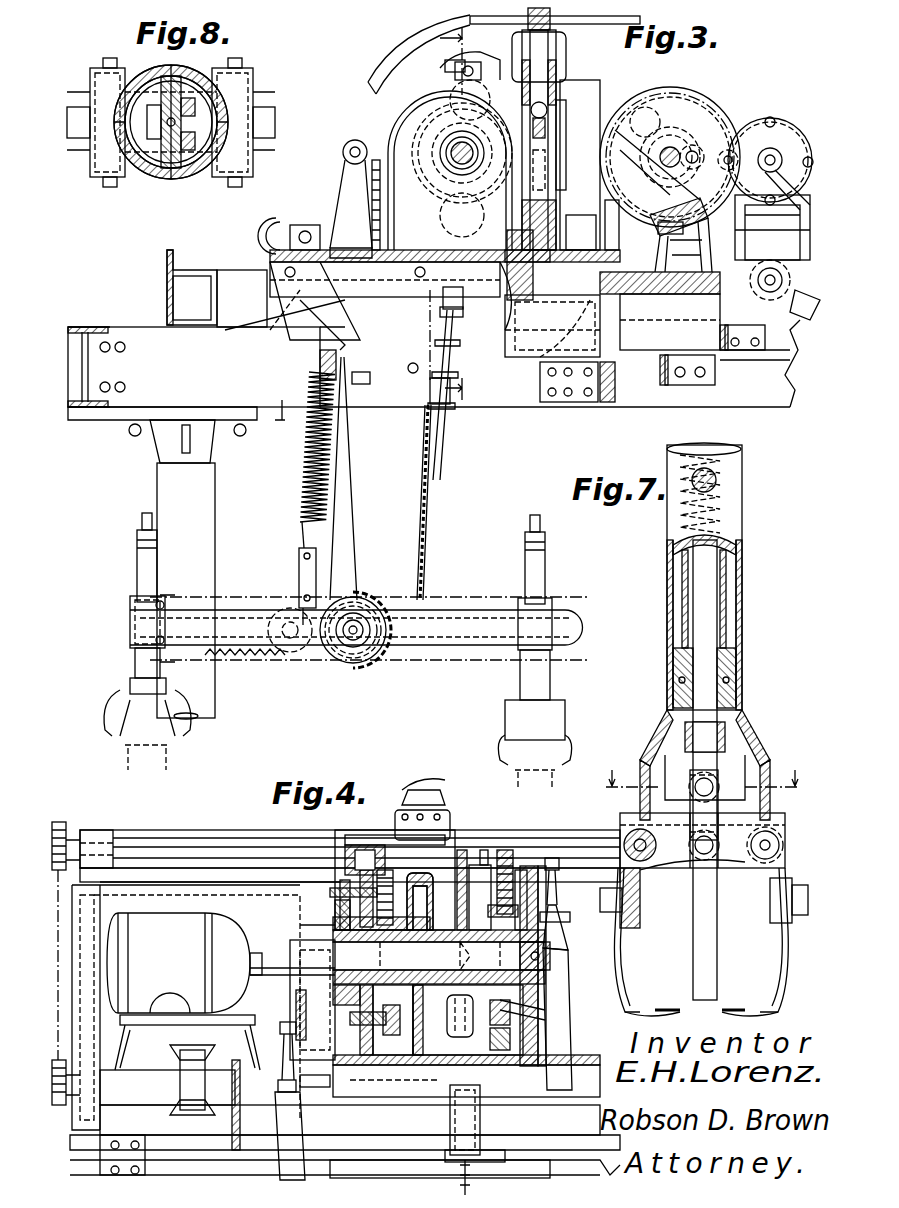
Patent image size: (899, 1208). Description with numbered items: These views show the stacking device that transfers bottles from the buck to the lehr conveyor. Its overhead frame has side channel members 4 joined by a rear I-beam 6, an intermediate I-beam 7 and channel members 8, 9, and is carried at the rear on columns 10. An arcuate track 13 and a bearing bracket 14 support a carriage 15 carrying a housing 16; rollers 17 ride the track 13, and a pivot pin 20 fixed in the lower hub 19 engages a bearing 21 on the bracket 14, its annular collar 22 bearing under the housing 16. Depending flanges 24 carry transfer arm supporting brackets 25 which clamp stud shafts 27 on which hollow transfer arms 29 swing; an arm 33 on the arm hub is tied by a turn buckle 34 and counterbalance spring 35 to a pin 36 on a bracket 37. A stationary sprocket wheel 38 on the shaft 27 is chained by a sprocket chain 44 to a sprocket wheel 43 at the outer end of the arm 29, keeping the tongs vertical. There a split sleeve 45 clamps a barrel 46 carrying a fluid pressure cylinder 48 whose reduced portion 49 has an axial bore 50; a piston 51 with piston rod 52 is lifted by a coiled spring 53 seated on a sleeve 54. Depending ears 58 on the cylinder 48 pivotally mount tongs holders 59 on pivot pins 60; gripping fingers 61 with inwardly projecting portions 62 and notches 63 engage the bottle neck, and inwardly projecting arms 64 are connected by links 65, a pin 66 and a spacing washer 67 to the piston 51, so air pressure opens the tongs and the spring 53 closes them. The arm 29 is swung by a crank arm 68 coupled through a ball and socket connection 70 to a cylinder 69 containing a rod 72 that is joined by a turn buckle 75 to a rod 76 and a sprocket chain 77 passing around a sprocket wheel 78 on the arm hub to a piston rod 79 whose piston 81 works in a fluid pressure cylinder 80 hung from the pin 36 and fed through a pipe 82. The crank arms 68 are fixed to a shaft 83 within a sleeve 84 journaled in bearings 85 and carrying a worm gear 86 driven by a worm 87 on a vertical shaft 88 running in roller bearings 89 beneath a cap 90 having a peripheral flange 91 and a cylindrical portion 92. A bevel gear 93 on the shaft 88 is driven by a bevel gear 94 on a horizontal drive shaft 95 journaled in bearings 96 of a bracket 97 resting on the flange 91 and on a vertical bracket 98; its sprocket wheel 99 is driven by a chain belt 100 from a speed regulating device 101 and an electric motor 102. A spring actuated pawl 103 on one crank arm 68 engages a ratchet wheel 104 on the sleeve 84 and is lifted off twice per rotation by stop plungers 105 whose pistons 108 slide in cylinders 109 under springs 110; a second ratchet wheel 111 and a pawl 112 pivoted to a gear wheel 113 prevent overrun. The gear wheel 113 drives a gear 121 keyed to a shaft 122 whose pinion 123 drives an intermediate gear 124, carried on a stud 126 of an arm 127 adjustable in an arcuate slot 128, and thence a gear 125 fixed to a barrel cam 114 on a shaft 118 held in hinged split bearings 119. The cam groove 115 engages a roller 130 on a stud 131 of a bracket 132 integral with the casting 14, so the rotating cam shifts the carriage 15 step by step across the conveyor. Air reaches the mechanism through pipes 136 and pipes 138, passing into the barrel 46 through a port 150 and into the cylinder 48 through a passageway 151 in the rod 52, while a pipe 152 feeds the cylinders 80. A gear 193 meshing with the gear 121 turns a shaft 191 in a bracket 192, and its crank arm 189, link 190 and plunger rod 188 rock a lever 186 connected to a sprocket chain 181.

In FIG. 3, the side channel members 4 is at (376, 233).
In FIG. 4, the side channel members 4 is at (95, 1158).
In FIG. 3, the I-beam 6 is at (82, 372).
In FIG. 3, the intermediate I-beam 7 is at (580, 395).
In FIG. 4, the intermediate I-beam 7 is at (550, 1168).
In FIG. 3, the channel member 8 is at (715, 372).
In FIG. 7, the channel member 8 is at (704, 771).
In FIG. 3, the channel member 9 is at (770, 346).
In FIG. 3, the columns 10 is at (217, 522).
In FIG. 3, the arcuate track 13 is at (226, 290).
In FIG. 3, the bearing bracket 14 is at (500, 360).
In FIG. 4, the bearing bracket 14 is at (345, 1122).
In FIG. 3, the carriage 15 is at (394, 297).
In FIG. 4, the carriage 15 is at (490, 1070).
In FIG. 3, the mechanism housing 16 is at (400, 118).
In FIG. 4, the mechanism housing 16 is at (440, 890).
In FIG. 3, the rollers 17 is at (276, 222).
In FIG. 3, the lower hub portion 19 is at (580, 165).
In FIG. 3, the pivot pin 20 is at (582, 233).
In FIG. 3, the bearing 21 is at (500, 300).
In FIG. 3, the annular collar 22 is at (644, 225).
In FIG. 3, the depending flanges 24 is at (266, 312).
In FIG. 4, the depending flanges 24 is at (232, 1114).
In FIG. 3, the transfer arm supporting bracket 25 is at (420, 500).
In FIG. 3, the stud shaft 27 is at (356, 628).
In FIG. 3, the transfer arm 29 is at (494, 610).
In FIG. 3, the arm 33 is at (300, 660).
In FIG. 3, the turn buckle 34 is at (300, 580).
In FIG. 3, the spring 35 is at (308, 478).
In FIG. 3, the pin 36 is at (346, 146).
In FIG. 3, the bracket 37 is at (342, 170).
In FIG. 3, the sprocket wheel 38 is at (340, 662).
In FIG. 3, the sprocket wheel 43 is at (186, 606).
In FIG. 3, the sprocket chain 44 is at (235, 596).
In FIG. 3, the split sleeve 45 is at (130, 614).
In FIG. 3, the barrel 46 is at (137, 568).
In FIG. 7, the barrel 46 is at (742, 580).
In FIG. 8, the fluid pressure cylinder 48 is at (178, 178).
In FIG. 3, the fluid pressure cylinder 48 is at (135, 672).
In FIG. 7, the fluid pressure cylinder 48 is at (748, 740).
In FIG. 7, the reduced portion 49 is at (730, 694).
In FIG. 7, the axial bore 50 is at (712, 668).
In FIG. 8, the piston 51 is at (166, 176).
In FIG. 7, the piston 51 is at (646, 760).
In FIG. 7, the piston rod 52 is at (718, 600).
In FIG. 7, the coiled spring 53 is at (673, 548).
In FIG. 7, the sleeve 54 is at (682, 600).
In FIG. 8, the depending ears 58 is at (130, 72).
In FIG. 7, the depending ears 58 is at (622, 822).
In FIG. 7, the tongs holder 59 is at (622, 868).
In FIG. 8, the pivot pin 60 is at (242, 63).
In FIG. 7, the pivot pin 60 is at (630, 846).
In FIG. 8, the gripping fingers 61 is at (90, 90).
In FIG. 3, the gripping fingers 61 is at (105, 720).
In FIG. 7, the gripping fingers 61 is at (622, 978).
In FIG. 7, the inwardly projecting portion 62 is at (650, 1012).
In FIG. 7, the notch 63 is at (730, 1010).
In FIG. 8, the inwardly projecting arms 64 is at (155, 82).
In FIG. 7, the inwardly projecting arms 64 is at (740, 862).
In FIG. 8, the links 65 is at (189, 124).
In FIG. 7, the links 65 is at (680, 862).
In FIG. 8, the pin 66 is at (178, 80).
In FIG. 7, the pin 66 is at (714, 782).
In FIG. 8, the spacing washer 67 is at (145, 122).
In FIG. 7, the spacing washer 67 is at (722, 786).
In FIG. 3, the crank arm 68 is at (455, 70).
In FIG. 4, the crank arm 68 is at (540, 880).
In FIG. 3, the cylinder 69 is at (443, 296).
In FIG. 4, the cylinder 69 is at (278, 1144).
In FIG. 4, the ball and socket connection 70 is at (280, 1040).
In FIG. 3, the rod 72 is at (440, 336).
In FIG. 3, the turn buckle 75 is at (436, 374).
In FIG. 3, the rod 76 is at (440, 420).
In FIG. 3, the sprocket chain 77 is at (432, 520).
In FIG. 3, the sprocket wheel 78 is at (385, 662).
In FIG. 3, the piston rod 79 is at (343, 452).
In FIG. 3, the fluid pressure cylinder 80 is at (285, 324).
In FIG. 3, the piston 81 is at (310, 337).
In FIG. 3, the pipe 82 is at (362, 384).
In FIG. 3, the shaft 83 is at (445, 165).
In FIG. 4, the shaft 83 is at (552, 958).
In FIG. 4, the sleeve 84 is at (439, 950).
In FIG. 4, the bearings 85 is at (338, 912).
In FIG. 3, the worm gear 86 is at (352, 196).
In FIG. 4, the worm gear 86 is at (410, 1060).
In FIG. 3, the worm 87 is at (574, 150).
In FIG. 3, the vertical shaft 88 is at (483, 129).
In FIG. 3, the roller bearings 89 is at (492, 221).
In FIG. 3, the cap 90 is at (556, 75).
In FIG. 3, the peripheral flange 91 is at (560, 88).
In FIG. 3, the cylindrical portion 92 is at (575, 100).
In FIG. 3, the bevel gear 93 is at (566, 52).
In FIG. 4, the bevel gear 93 is at (440, 830).
In FIG. 3, the bevel gear 94 is at (552, 20).
In FIG. 4, the bevel gear 94 is at (372, 845).
In FIG. 3, the horizontal drive shaft 95 is at (500, 24).
In FIG. 4, the horizontal drive shaft 95 is at (248, 850).
In FIG. 4, the bearings 96 is at (98, 836).
In FIG. 4, the bracket 97 is at (208, 830).
In FIG. 3, the vertical bracket 98 is at (648, 330).
In FIG. 4, the vertical bracket 98 is at (102, 912).
In FIG. 4, the sprocket wheel 99 is at (58, 822).
In FIG. 3, the chain belt 100 is at (790, 140).
In FIG. 4, the chain belt 100 is at (60, 934).
In FIG. 3, the speed regulating device 101 is at (830, 270).
In FIG. 4, the speed regulating device 101 is at (180, 1065).
In FIG. 3, the electric motor 102 is at (792, 140).
In FIG. 4, the electric motor 102 is at (222, 930).
In FIG. 3, the spring actuated pawl 103 is at (470, 59).
In FIG. 4, the spring actuated pawl 103 is at (300, 1012).
In FIG. 3, the ratchet wheel 104 is at (415, 138).
In FIG. 4, the ratchet wheel 104 is at (308, 918).
In FIG. 3, the stop plungers 105 is at (432, 112).
In FIG. 4, the stop plungers 105 is at (345, 894).
In FIG. 4, the pistons 108 is at (340, 834).
In FIG. 4, the cylinders 109 is at (360, 830).
In FIG. 4, the springs 110 is at (439, 963).
In FIG. 4, the ratchet wheel 111 is at (548, 1014).
In FIG. 4, the pawl 112 is at (571, 917).
In FIG. 4, the gear wheel 113 is at (510, 1008).
In FIG. 3, the barrel cam 114 is at (720, 110).
In FIG. 3, the cam groove 115 is at (699, 243).
In FIG. 3, the shaft 118 is at (698, 148).
In FIG. 3, the hinged split bearings 119 is at (720, 106).
In FIG. 4, the gear 121 is at (510, 1036).
In FIG. 3, the shaft 122 is at (657, 165).
In FIG. 3, the pinion 123 is at (663, 215).
In FIG. 3, the intermediate gear 124 is at (670, 139).
In FIG. 3, the gear 125 is at (709, 245).
In FIG. 3, the stud 126 is at (673, 146).
In FIG. 3, the arm 127 is at (690, 98).
In FIG. 3, the arcuate slot 128 is at (650, 104).
In FIG. 3, the roller 130 is at (660, 294).
In FIG. 3, the stud 131 is at (670, 321).
In FIG. 3, the bracket 132 is at (742, 327).
In FIG. 3, the pipes 136 is at (388, 38).
In FIG. 4, the pipes 136 is at (446, 776).
In FIG. 3, the pipe 138 is at (400, 90).
In FIG. 7, the port 150 is at (680, 500).
In FIG. 7, the passageway 151 is at (673, 665).
In FIG. 3, the pipe 152 is at (392, 60).
In FIG. 4, the pipe 152 is at (423, 788).
In FIG. 4, the sprocket chain 181 is at (455, 1172).
In FIG. 4, the lever 186 is at (450, 1110).
In FIG. 4, the plunger rod 188 is at (470, 1020).
In FIG. 4, the crank arm 189 is at (480, 865).
In FIG. 4, the link 190 is at (462, 850).
In FIG. 4, the shaft 191 is at (505, 905).
In FIG. 4, the bracket 192 is at (488, 852).
In FIG. 4, the gear 193 is at (522, 870).